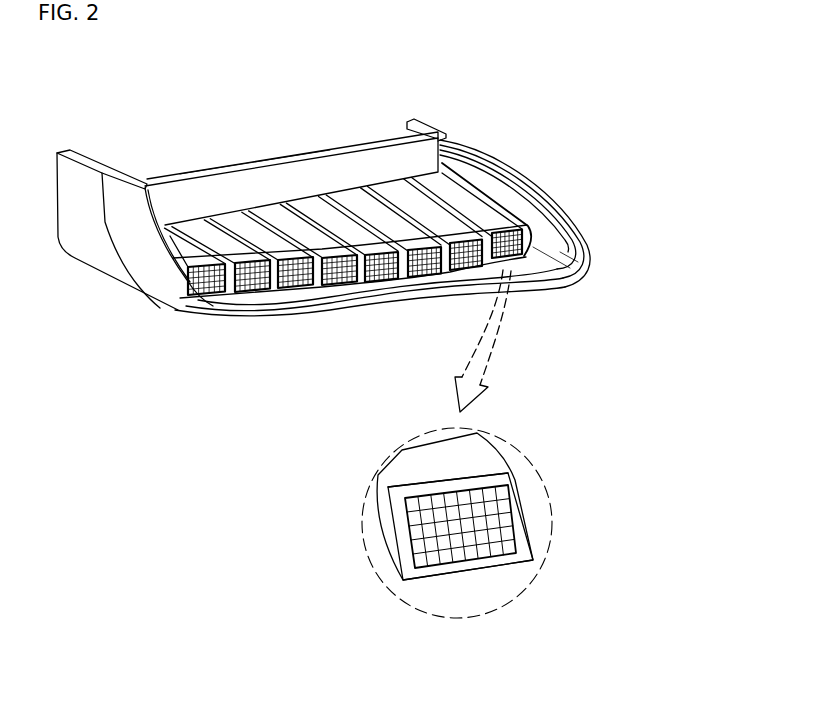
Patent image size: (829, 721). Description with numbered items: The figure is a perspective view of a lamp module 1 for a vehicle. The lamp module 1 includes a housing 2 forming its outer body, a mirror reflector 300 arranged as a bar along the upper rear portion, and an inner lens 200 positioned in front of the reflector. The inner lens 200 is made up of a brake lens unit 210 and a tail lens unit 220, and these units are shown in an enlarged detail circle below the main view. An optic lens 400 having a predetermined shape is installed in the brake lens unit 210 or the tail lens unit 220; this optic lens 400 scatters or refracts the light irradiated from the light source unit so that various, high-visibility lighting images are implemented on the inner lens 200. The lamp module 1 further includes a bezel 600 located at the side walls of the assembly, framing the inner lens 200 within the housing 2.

The lamp module 1 is at (71, 71).
The housing 2 is at (183, 300).
The inner lens 200 is at (482, 213).
The brake lens unit 210 is at (490, 481).
The tail lens unit 220 is at (460, 436).
The mirror reflector 300 is at (368, 165).
The optic lens 400 is at (460, 557).
The bezel 600 is at (452, 210).